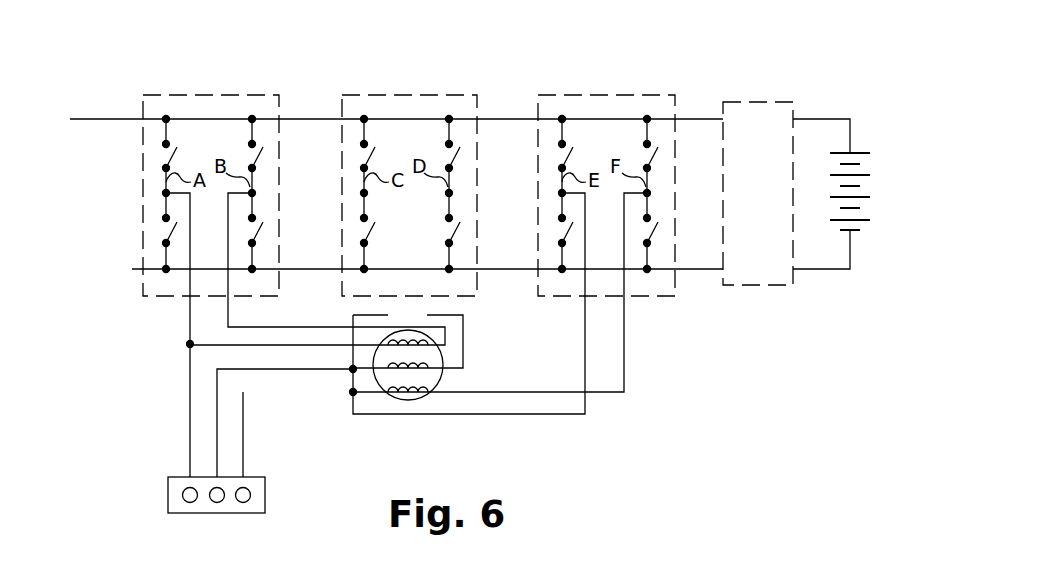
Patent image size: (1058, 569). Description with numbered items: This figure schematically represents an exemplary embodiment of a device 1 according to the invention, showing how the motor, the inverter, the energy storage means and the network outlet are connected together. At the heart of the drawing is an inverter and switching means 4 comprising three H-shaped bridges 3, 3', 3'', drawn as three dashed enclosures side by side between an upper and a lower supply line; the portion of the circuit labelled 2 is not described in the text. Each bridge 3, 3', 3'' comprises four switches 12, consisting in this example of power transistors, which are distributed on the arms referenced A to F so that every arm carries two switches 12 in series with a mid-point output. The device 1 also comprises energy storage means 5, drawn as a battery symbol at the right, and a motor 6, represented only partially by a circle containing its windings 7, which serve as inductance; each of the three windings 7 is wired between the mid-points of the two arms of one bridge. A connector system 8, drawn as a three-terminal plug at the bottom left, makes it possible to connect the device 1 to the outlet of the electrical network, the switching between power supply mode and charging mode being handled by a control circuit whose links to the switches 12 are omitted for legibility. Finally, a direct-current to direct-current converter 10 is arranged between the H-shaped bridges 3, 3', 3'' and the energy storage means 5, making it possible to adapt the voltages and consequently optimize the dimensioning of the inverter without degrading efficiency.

The device 1 is at (150, 375).
The inverter 2 is at (92, 257).
The H-shaped bridge 3 is at (211, 172).
The H-shaped bridge 3' is at (409, 172).
The H-shaped bridge 3'' is at (606, 172).
The inverter and switching means 4 is at (160, 183).
The energy storage means 5 is at (858, 152).
The motor 6 is at (418, 400).
The windings 7 is at (426, 339).
The connector system 8 is at (265, 495).
The DC/DC converter 10 is at (755, 286).
The switches 12 is at (686, 224).